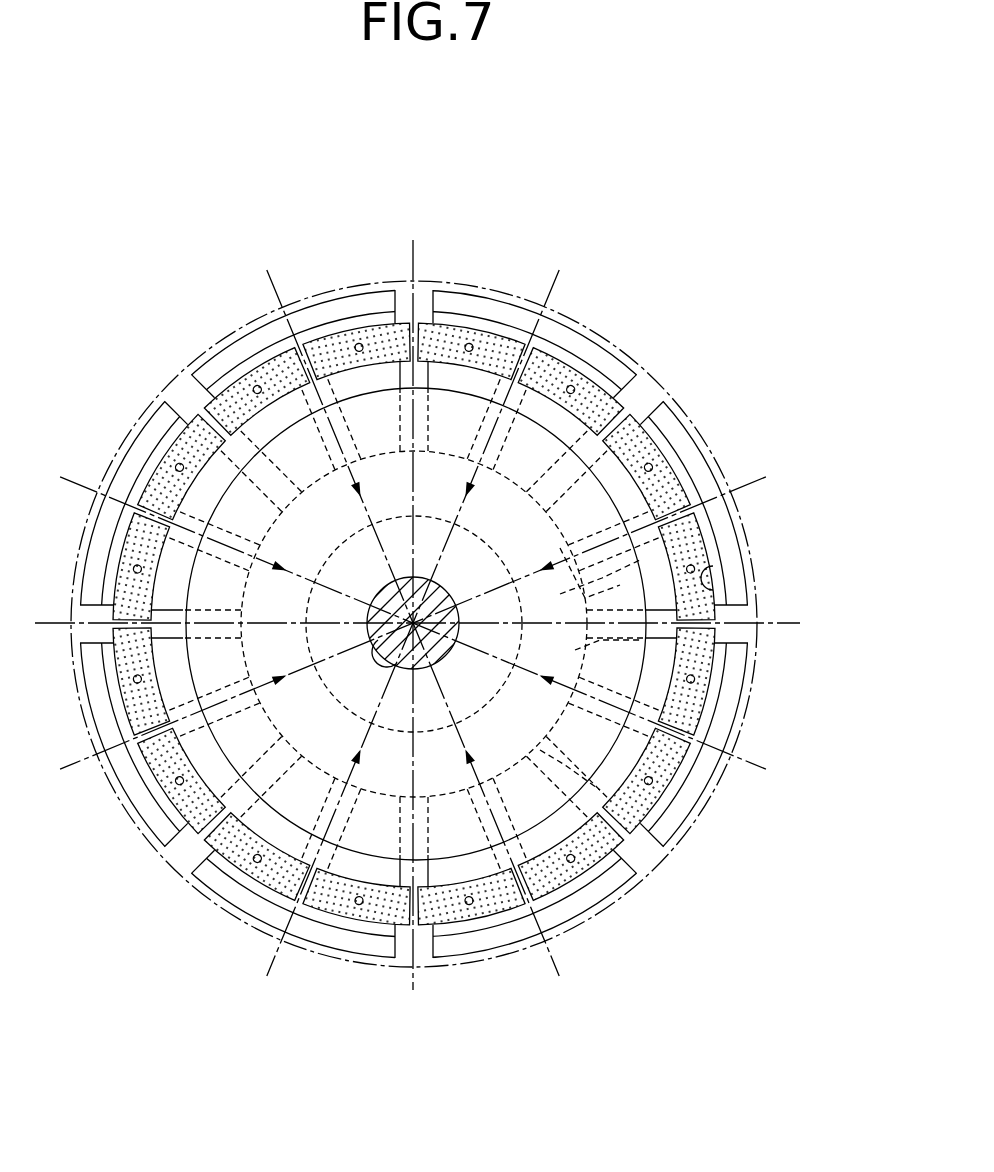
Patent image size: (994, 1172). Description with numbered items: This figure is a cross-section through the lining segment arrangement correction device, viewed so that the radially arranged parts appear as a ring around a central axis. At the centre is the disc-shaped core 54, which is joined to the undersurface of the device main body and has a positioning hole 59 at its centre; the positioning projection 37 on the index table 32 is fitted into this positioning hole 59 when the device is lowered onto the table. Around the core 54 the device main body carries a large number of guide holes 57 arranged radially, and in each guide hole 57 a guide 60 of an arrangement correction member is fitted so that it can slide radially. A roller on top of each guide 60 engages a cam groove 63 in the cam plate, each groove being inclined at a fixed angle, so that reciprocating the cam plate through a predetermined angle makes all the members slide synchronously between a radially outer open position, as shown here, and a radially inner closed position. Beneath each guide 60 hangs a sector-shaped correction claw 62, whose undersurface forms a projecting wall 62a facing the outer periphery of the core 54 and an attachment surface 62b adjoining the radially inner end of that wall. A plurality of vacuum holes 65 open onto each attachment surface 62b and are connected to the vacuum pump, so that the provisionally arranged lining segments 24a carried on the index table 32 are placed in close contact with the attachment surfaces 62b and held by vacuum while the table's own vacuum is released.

The index table 32 is at (173, 398).
The lining segment 24a is at (395, 292).
The vacuum hole 65 is at (470, 285).
The correction claw 62 is at (493, 318).
The projecting wall 62a is at (602, 380).
The attachment surface 62b is at (414, 624).
The positioning projection 37 is at (390, 602).
The positioning hole 59 is at (393, 663).
The cam groove 63 is at (560, 546).
The guide hole 57 is at (560, 592).
The guide 60 is at (582, 645).
The core 54 is at (490, 742).